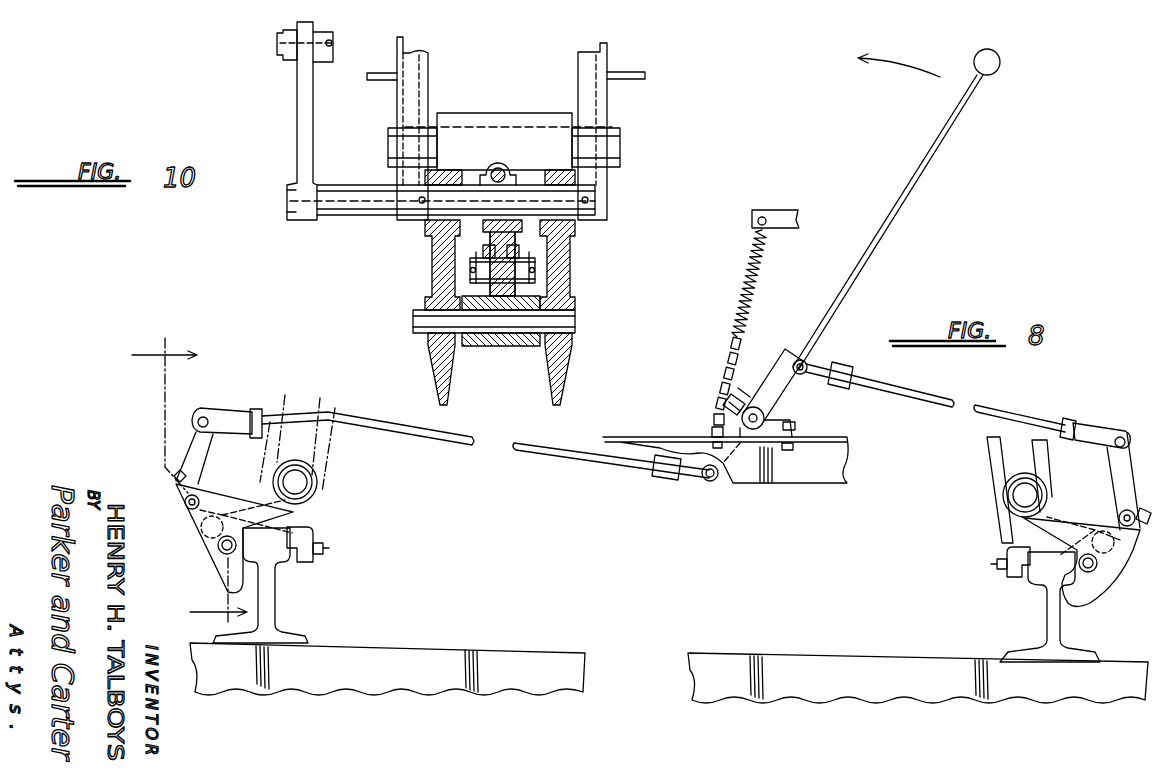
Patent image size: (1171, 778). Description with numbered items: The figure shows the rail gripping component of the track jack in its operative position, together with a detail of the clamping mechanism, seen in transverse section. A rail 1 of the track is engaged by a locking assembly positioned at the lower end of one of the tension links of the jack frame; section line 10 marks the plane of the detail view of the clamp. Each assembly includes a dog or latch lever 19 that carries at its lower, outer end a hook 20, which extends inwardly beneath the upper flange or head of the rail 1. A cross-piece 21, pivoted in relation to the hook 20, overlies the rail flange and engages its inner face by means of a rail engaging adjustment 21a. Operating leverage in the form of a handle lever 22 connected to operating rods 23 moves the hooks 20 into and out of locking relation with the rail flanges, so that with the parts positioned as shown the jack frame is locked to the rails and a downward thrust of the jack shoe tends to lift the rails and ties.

In FIG. 8, the rails 1 is at (267, 608).
In FIG. 8, the section line 10- 10 is at (189, 480).
In FIG. 10, the dog or latch lever 19 is at (496, 120).
In FIG. 8, the dog or latch lever 19 is at (250, 508).
In FIG. 10, the hook 20 is at (432, 378).
In FIG. 8, the hook 20 is at (213, 563).
In FIG. 10, the cross-piece 21 is at (497, 345).
In FIG. 8, the cross-piece 21 is at (299, 564).
In FIG. 8, the rail engaging adjustment 21a is at (320, 554).
In FIG. 8, the handle lever 22 is at (893, 205).
In FIG. 8, the operating rods 23 is at (918, 394).